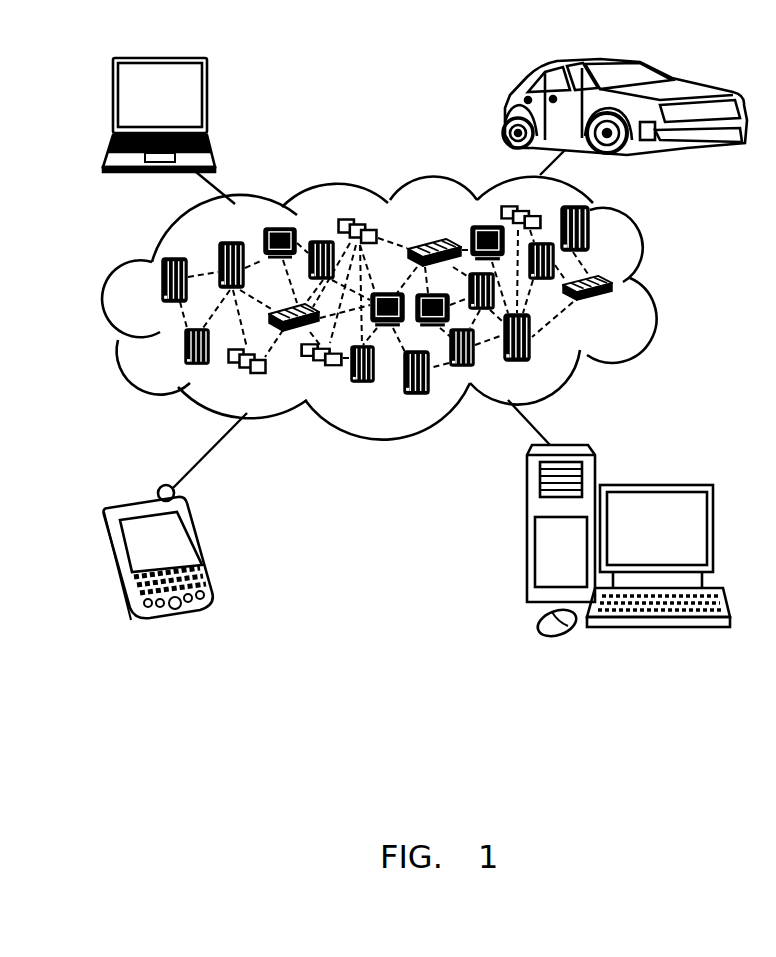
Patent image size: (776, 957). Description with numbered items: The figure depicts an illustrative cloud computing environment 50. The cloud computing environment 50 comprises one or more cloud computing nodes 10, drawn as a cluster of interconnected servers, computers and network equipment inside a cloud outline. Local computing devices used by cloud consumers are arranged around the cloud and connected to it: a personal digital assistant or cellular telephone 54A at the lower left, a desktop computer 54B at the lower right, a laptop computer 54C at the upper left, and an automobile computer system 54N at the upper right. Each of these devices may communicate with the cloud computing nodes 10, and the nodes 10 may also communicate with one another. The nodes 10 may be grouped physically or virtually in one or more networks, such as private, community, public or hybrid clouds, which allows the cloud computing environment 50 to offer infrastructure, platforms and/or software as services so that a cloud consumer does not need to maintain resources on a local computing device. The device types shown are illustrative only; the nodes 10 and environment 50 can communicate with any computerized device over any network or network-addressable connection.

The cloud computing nodes 10 is at (400, 308).
The cloud computing environment 50 is at (655, 289).
The personal digital assistant (PDA) or cellular telephone 54A is at (200, 545).
The desktop computer 54B is at (657, 483).
The laptop computer 54C is at (208, 100).
The automobile computer system 54N is at (510, 111).